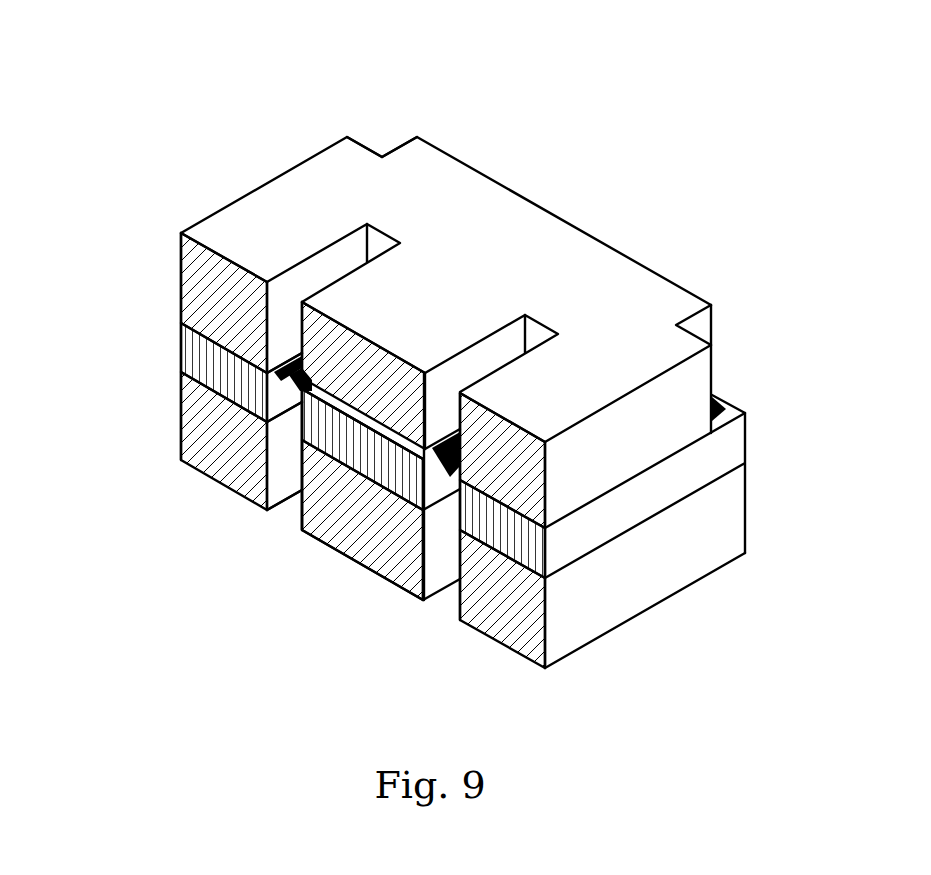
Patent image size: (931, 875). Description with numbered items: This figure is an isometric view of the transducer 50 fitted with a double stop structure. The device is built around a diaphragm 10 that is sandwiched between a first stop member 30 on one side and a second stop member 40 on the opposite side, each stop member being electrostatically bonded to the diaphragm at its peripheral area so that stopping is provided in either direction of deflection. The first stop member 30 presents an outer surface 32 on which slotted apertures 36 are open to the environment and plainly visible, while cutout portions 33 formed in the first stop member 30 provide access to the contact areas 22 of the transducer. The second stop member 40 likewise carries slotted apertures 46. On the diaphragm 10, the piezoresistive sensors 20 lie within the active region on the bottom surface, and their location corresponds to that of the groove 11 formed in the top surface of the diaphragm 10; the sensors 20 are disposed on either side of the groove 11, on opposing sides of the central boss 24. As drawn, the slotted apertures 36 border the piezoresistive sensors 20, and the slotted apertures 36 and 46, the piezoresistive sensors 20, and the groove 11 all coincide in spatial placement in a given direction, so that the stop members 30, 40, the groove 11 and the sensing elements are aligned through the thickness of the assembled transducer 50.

The diaphragm 10 is at (503, 510).
The groove 11 is at (280, 430).
The piezoresistive sensors 20 is at (283, 375).
The contact areas 22 is at (722, 399).
The central boss 24 is at (385, 467).
The first stop member 30 is at (496, 345).
The outer surface 32 is at (409, 301).
The cutout portions 33 is at (380, 112).
The slotted apertures 36 is at (287, 291).
The second stop member 40 is at (653, 590).
The slotted apertures 46 is at (275, 523).
The transducer 50 is at (450, 346).